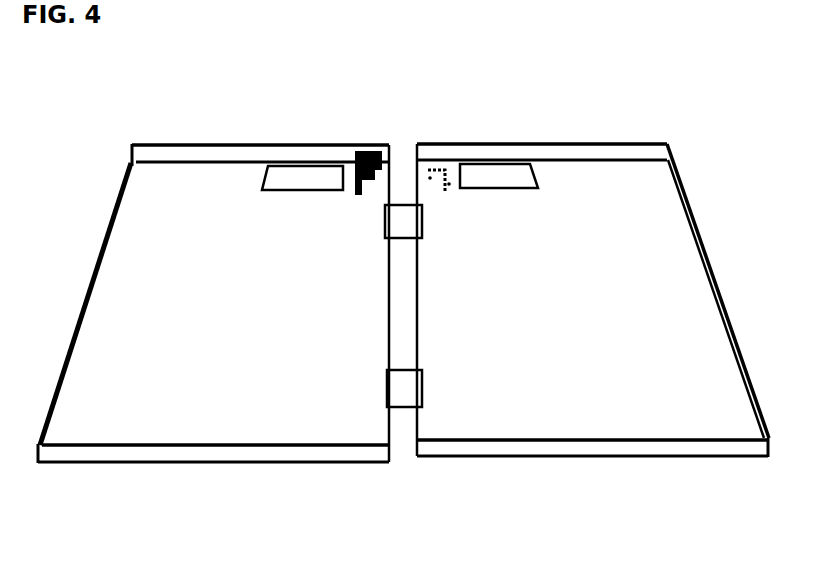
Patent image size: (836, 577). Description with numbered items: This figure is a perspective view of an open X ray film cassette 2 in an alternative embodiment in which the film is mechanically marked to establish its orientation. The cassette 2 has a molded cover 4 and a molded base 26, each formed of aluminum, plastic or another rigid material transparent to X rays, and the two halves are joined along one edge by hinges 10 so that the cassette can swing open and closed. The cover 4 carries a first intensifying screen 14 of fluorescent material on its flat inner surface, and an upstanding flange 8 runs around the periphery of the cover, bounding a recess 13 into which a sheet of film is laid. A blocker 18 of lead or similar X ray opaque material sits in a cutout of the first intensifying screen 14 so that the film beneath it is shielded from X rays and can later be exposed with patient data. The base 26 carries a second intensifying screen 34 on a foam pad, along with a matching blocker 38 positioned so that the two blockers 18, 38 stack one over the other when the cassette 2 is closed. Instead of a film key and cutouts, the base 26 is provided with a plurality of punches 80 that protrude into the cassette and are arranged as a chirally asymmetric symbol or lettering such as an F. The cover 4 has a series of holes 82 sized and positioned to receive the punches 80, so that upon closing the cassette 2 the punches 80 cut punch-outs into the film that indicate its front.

The X ray film cassette 2 is at (415, 322).
The cover 4 is at (562, 458).
The flange 8 is at (757, 437).
The hinge 10 is at (403, 306).
The recess 13 is at (623, 230).
The first intensifying screen 14 is at (253, 308).
The blocker 18 is at (493, 177).
The base 26 is at (255, 463).
The second intensifying screen 34 is at (557, 305).
The blocker 38 is at (300, 177).
The punch 80 is at (358, 157).
The hole 82 is at (437, 160).